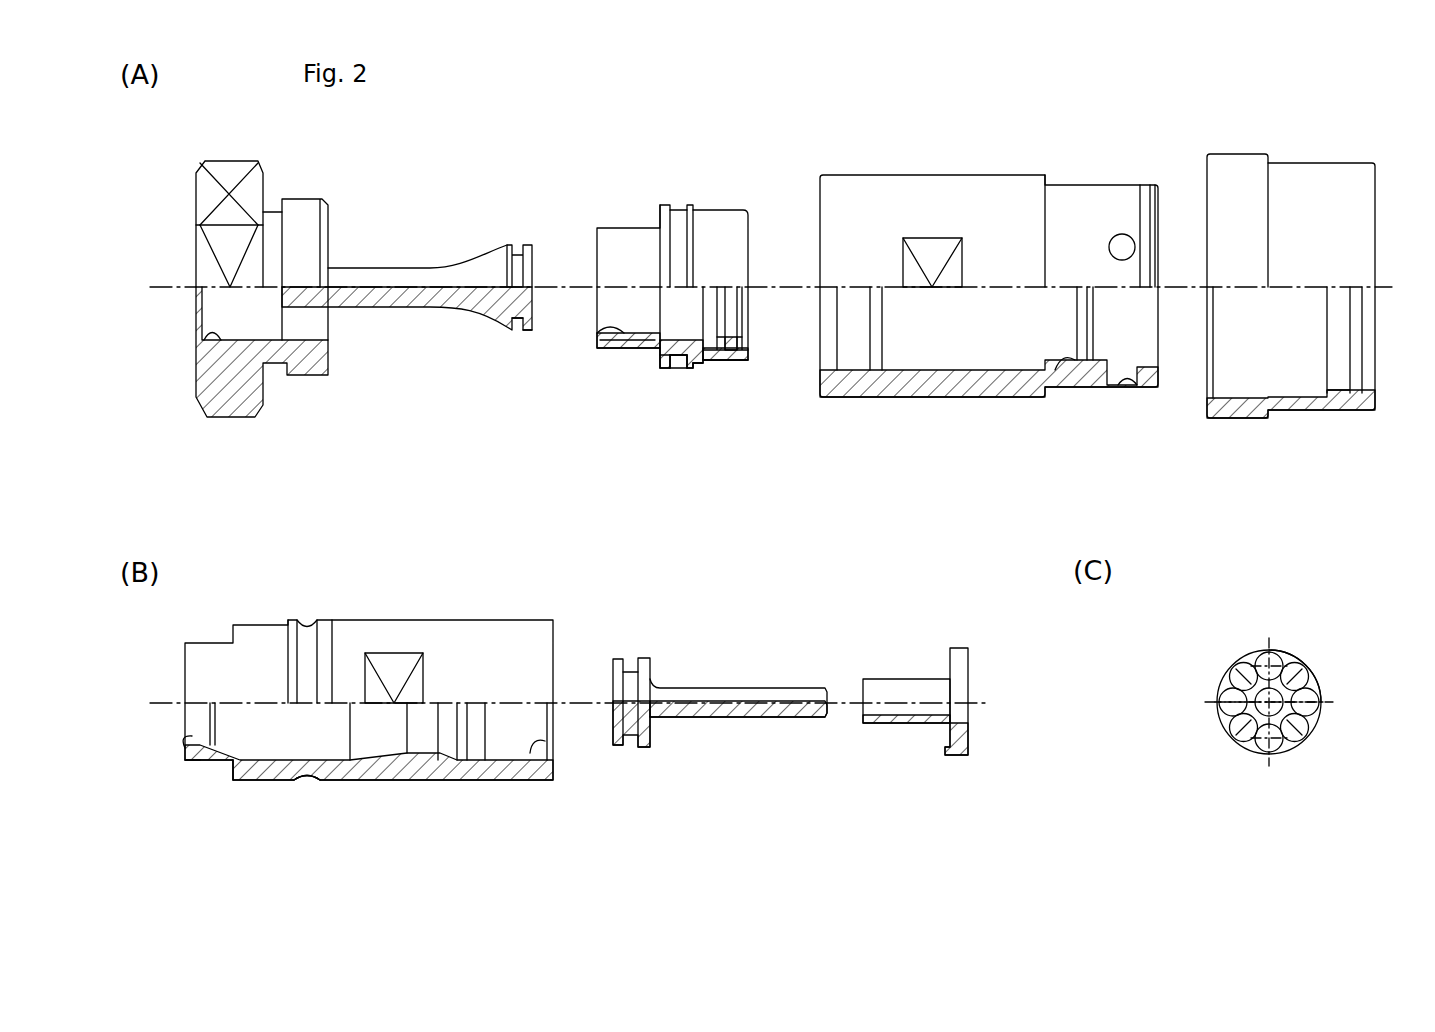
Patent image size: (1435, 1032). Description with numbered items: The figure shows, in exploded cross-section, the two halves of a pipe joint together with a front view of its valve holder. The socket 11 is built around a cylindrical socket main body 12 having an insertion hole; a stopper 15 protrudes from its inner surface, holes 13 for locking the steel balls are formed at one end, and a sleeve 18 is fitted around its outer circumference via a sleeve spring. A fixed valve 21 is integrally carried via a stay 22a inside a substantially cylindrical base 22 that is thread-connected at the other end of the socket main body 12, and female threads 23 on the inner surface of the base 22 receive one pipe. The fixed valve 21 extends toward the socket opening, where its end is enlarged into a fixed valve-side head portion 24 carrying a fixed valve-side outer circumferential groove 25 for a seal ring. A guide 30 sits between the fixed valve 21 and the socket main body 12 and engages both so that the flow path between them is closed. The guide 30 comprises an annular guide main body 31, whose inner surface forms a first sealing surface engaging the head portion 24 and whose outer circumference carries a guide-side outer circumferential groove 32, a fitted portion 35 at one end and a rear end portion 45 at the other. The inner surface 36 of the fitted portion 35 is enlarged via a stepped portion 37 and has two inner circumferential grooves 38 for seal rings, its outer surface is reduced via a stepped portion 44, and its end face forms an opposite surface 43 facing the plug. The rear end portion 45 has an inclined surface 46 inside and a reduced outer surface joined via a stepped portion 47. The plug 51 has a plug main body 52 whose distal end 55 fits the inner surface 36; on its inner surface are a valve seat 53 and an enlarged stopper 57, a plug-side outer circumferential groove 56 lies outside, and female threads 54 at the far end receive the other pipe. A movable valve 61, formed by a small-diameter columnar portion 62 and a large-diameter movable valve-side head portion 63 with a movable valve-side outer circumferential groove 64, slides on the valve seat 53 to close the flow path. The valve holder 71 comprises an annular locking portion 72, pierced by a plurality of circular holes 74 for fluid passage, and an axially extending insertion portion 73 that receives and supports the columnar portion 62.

In FIG. 2A, the socket 11 is at (754, 127).
In FIG. 2A, the socket main body 12 is at (975, 400).
In FIG. 2A, the holes for locking the steel balls 13 is at (1126, 386).
In FIG. 2A, the stopper 15 is at (1058, 368).
In FIG. 2A, the sleeve 18 is at (1301, 412).
In FIG. 2A, the fixed valve 21 is at (417, 309).
In FIG. 2A, the base 22 is at (228, 418).
In FIG. 2A, the stay 22a is at (313, 323).
In FIG. 2A, the female threads 23 is at (210, 332).
In FIG. 2A, the fixed valve-side head portion 24 is at (531, 334).
In FIG. 2A, the fixed valve-side outer circumferential groove 25 is at (517, 329).
In FIG. 2A, the guide 30 is at (640, 223).
In FIG. 2A, the guide main body 31 is at (680, 348).
In FIG. 2A, the guide-side outer circumferential groove 32 is at (676, 370).
In FIG. 2A, the fitted portion 35 is at (731, 361).
In FIG. 2A, the inner surface 36 is at (738, 341).
In FIG. 2A, the stepped portion 37 is at (712, 361).
In FIG. 2A, the inner circumferential grooves 38 is at (717, 337).
In FIG. 2A, the opposite surface 43 is at (749, 358).
In FIG. 2A, the stepped portion 44 is at (694, 366).
In FIG. 2A, the rear end portion 45 is at (623, 342).
In FIG. 2A, the inclined surface 46 is at (597, 331).
In FIG. 2A, the stepped portion 47 is at (660, 363).
In FIG. 2B, the plug 51 is at (504, 600).
In FIG. 2B, the plug main body 52 is at (367, 787).
In FIG. 2B, the valve seat 53 is at (183, 743).
In FIG. 2B, the female threads 54 is at (550, 741).
In FIG. 2B, the distal end 55 is at (192, 762).
In FIG. 2B, the plug-side outer circumferential groove 56 is at (310, 782).
In FIG. 2B, the stopper 57 is at (238, 771).
In FIG. 2B, the movable valve 61 is at (712, 771).
In FIG. 2B, the columnar portion 62 is at (708, 716).
In FIG. 2B, the movable valve-side head portion 63 is at (647, 749).
In FIG. 2B, the movable valve-side outer circumferential groove 64 is at (628, 748).
In FIG. 2B, the valve holder 71 is at (915, 762).
In FIG. 2C, the valve holder 71 is at (1292, 688).
In FIG. 2B, the locking portion 72 is at (946, 751).
In FIG. 2C, the locking portion 72 is at (1318, 680).
In FIG. 2B, the insertion portion 73 is at (922, 726).
In FIG. 2C, the insertion portion 73 is at (1310, 737).
In FIG. 2C, the circular holes 74 is at (1230, 738).